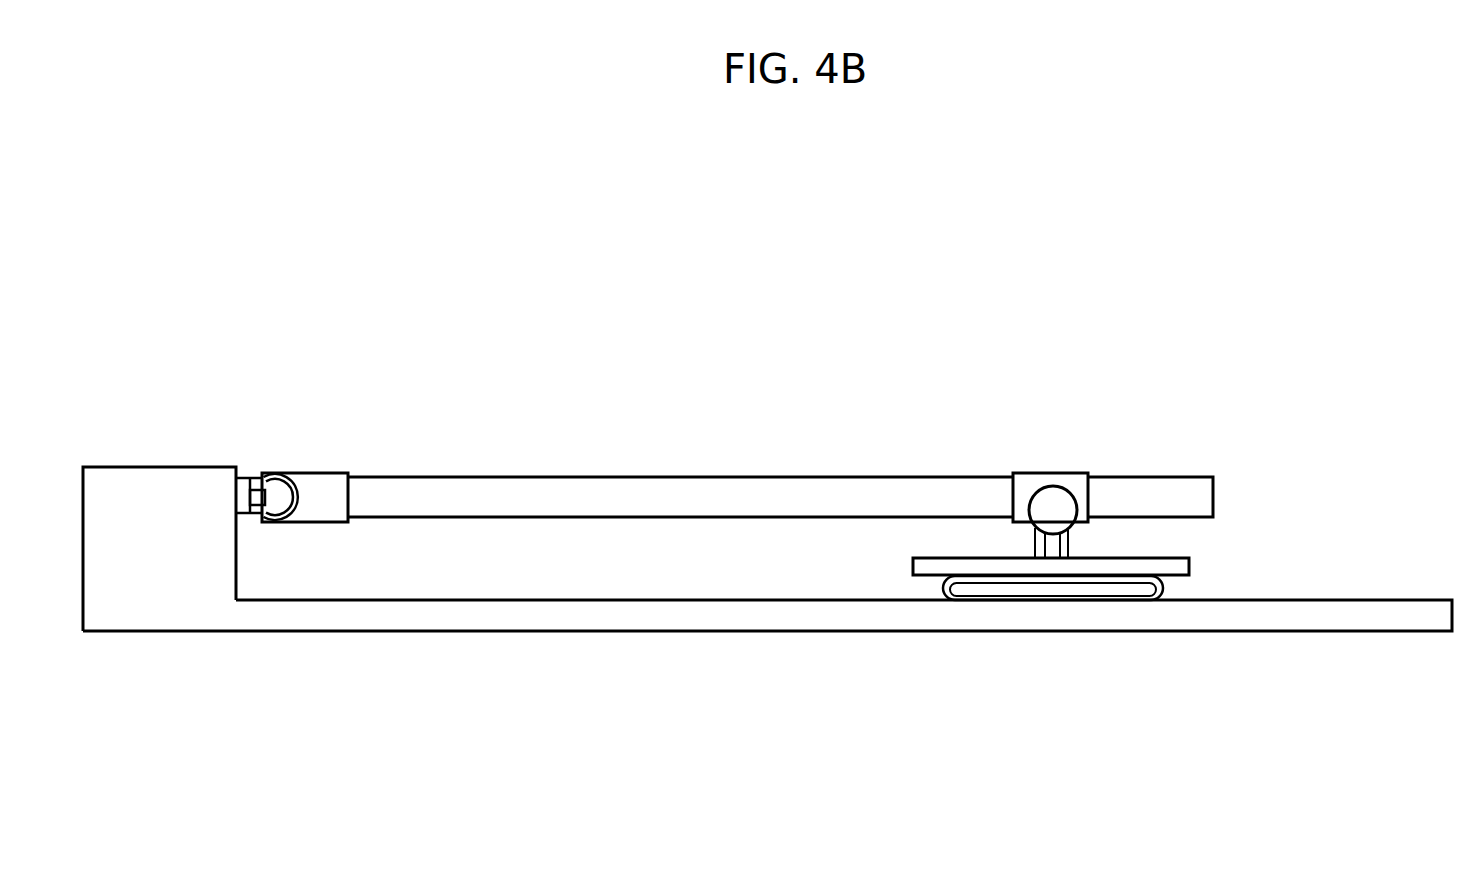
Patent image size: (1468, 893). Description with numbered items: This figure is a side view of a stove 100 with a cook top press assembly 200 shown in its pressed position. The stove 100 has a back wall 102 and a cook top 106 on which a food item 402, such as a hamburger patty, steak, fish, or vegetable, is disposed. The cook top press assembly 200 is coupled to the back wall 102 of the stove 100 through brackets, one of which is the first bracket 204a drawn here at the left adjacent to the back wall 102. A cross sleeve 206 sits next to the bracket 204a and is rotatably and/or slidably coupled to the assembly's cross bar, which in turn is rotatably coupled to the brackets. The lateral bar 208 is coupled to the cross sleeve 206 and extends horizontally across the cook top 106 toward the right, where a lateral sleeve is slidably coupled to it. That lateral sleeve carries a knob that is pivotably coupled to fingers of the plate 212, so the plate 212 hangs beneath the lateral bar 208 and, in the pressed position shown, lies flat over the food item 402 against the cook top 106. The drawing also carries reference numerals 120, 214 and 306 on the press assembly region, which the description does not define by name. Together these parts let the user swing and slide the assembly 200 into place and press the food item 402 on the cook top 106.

The stove 100 is at (224, 717).
The back wall 102 is at (233, 540).
The cook top 106 is at (725, 621).
The print head 120 is at (1023, 487).
The cook top press assembly 200 is at (1270, 488).
The first bracket 204a is at (278, 497).
The cross sleeve 206 is at (322, 482).
The lateral bar 208 is at (757, 493).
The plate 212 is at (1175, 567).
The connector pin 214 is at (253, 490).
The carriage block 306 is at (1062, 510).
The food item 402 is at (1038, 590).